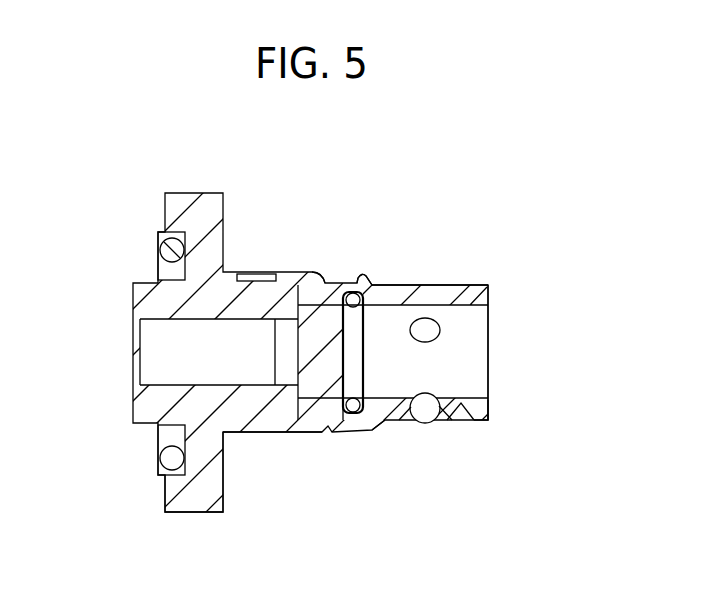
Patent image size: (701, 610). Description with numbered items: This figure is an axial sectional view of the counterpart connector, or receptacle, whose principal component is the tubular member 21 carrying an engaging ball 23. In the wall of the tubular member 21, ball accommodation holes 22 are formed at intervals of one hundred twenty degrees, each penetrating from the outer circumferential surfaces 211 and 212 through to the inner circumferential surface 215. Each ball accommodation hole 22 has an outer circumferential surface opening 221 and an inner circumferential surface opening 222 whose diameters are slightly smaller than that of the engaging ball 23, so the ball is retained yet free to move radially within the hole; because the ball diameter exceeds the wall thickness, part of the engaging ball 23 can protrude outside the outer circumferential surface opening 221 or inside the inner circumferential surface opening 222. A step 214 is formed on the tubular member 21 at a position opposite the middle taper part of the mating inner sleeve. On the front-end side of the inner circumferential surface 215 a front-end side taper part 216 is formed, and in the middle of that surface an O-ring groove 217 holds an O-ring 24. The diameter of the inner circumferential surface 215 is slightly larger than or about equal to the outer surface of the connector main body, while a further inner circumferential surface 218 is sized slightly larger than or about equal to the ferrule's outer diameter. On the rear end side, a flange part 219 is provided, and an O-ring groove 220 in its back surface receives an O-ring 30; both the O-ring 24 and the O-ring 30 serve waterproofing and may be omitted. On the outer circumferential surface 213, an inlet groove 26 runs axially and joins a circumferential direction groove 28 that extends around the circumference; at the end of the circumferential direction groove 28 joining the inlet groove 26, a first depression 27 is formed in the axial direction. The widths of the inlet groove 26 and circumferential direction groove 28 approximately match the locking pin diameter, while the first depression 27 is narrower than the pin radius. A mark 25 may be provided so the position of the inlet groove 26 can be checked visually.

The tubular member 21 is at (289, 282).
The ball accommodation hole 22 is at (428, 331).
The engaging ball 23 is at (426, 412).
The O-ring 24 is at (357, 412).
The mark 25 is at (255, 276).
The inlet groove 26 is at (369, 276).
The first depression 27 is at (320, 276).
The circumferential direction groove 28 is at (345, 290).
The O-ring 30 is at (158, 460).
The outer circumferential surface 211 is at (455, 283).
The outer circumferential surface 212 is at (402, 283).
The outer circumferential surface 213 is at (323, 432).
The step 214 is at (430, 283).
The inner circumferential surface 215 is at (390, 388).
The front-end side taper part 216 is at (488, 403).
The O-ring groove 217 is at (347, 403).
The inner circumferential surface 218 is at (247, 374).
The flange part 219 is at (200, 500).
The O-ring groove 220 is at (163, 468).
The outer circumferential surface opening 221 is at (438, 413).
The inner circumferential surface opening 222 is at (405, 386).